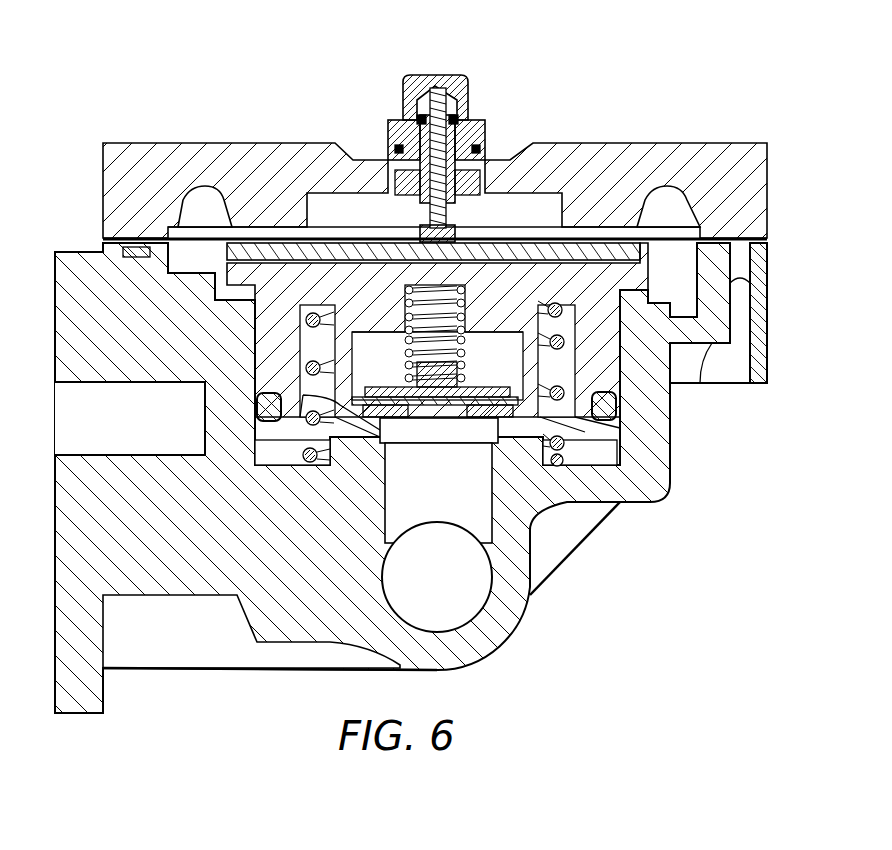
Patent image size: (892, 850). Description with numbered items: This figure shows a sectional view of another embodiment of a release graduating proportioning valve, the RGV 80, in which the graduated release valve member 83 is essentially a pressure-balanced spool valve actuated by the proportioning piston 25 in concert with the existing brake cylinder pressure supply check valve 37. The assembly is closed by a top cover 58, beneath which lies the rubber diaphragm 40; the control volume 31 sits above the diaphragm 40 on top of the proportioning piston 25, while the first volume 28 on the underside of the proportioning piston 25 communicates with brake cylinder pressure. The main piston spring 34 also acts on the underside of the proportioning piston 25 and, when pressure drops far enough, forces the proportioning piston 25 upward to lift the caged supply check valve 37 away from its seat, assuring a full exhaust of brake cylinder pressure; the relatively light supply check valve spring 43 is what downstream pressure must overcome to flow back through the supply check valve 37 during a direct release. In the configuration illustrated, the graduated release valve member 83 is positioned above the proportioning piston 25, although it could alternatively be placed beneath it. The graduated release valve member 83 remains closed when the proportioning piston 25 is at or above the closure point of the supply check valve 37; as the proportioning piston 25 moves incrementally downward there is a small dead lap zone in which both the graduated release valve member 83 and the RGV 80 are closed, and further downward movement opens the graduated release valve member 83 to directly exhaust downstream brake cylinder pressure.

The RGV 80 is at (212, 112).
The graduated release valve member 83 is at (388, 94).
The control volume 31 is at (335, 210).
The top cover 58 is at (648, 143).
The diaphragm 40 is at (677, 232).
The supply check valve spring 43 is at (465, 340).
The main piston spring 34 is at (580, 434).
The supply check valve 37 is at (440, 410).
The first volume 28 is at (438, 487).
The proportioning piston 25 is at (303, 395).